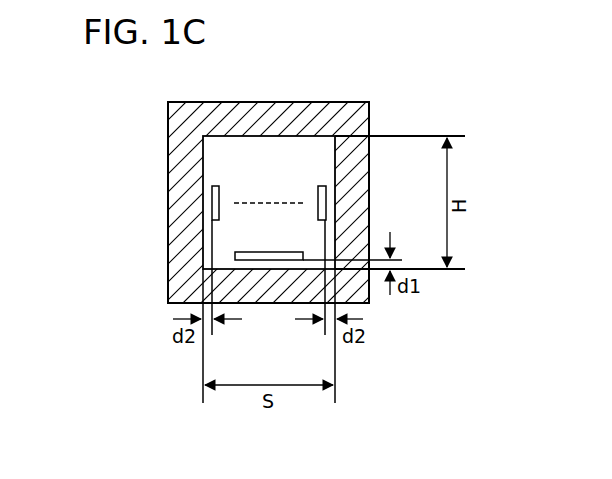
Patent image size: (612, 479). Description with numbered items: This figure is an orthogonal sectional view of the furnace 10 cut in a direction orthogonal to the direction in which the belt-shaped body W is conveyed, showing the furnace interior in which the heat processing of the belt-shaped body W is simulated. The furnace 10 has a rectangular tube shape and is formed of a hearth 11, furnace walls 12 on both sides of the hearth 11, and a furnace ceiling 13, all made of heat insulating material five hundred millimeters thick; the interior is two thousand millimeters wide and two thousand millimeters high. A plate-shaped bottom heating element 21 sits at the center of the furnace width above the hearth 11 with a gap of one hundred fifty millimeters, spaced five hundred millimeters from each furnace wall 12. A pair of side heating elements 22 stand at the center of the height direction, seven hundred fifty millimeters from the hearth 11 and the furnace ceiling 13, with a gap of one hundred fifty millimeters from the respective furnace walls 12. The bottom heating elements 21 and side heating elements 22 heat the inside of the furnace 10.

The furnace 10 is at (376, 111).
The hearth 11 is at (294, 290).
The furnace walls 12 is at (178, 217).
The furnace ceiling 13 is at (272, 112).
The bottom heating elements 21 is at (250, 262).
The side heating elements 22 is at (212, 198).
The belt-shaped body W is at (243, 200).